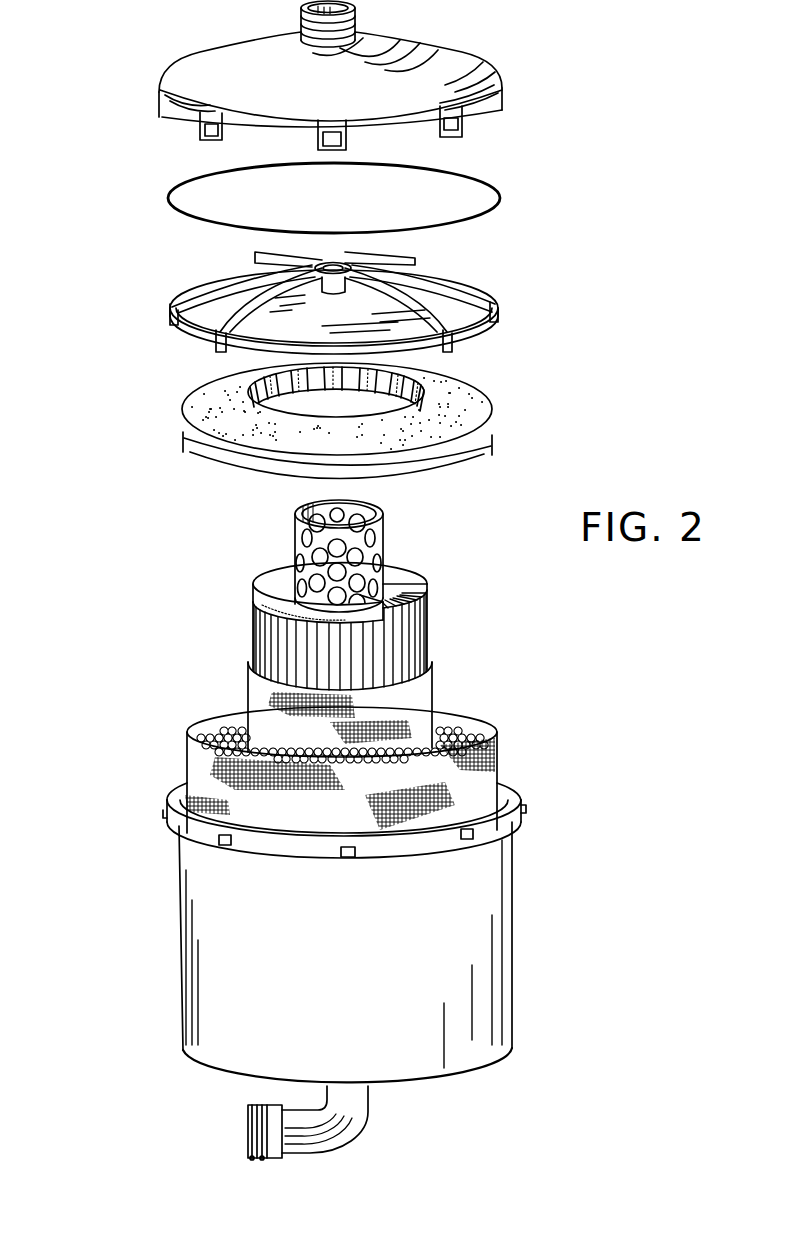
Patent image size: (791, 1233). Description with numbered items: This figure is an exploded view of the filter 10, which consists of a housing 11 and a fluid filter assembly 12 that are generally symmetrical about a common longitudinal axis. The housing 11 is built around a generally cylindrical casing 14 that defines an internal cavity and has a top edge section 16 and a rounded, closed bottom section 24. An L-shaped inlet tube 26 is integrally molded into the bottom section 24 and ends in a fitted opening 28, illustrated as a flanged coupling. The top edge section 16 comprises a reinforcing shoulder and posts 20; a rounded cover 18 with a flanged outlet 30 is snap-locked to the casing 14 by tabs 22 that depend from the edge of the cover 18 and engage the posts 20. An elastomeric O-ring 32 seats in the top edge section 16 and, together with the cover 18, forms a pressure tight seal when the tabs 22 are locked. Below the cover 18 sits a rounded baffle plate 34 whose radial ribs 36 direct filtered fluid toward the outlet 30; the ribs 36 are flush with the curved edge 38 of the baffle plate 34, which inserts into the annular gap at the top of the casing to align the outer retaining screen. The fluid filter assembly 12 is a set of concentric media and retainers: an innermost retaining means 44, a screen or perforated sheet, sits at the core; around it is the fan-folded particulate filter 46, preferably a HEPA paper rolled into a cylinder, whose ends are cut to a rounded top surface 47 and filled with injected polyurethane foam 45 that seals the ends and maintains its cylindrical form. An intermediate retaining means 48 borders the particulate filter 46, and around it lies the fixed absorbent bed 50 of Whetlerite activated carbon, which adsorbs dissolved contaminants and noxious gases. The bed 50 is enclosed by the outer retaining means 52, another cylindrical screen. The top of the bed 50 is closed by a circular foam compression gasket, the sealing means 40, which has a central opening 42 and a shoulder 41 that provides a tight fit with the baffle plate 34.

The filter 10 is at (156, 904).
The housing 11 is at (245, 961).
The fluid filter assembly 12 is at (148, 603).
The casing 14 is at (355, 969).
The top edge section 16 is at (349, 830).
The cover 18 is at (300, 79).
The posts 20 is at (470, 836).
The tabs 22 is at (208, 138).
The bottom section 24 is at (403, 1088).
The inlet tube 26 is at (350, 1113).
The fitted opening 28 is at (250, 1095).
The outlet 30 is at (356, 4).
The O-ring 32 is at (478, 178).
The baffle plate 34 is at (416, 270).
The ribs 36 is at (474, 284).
The edge 38 is at (427, 350).
The sealing means 40 is at (297, 427).
The shoulder 41 is at (362, 382).
The central opening 42 is at (307, 410).
The innermost retaining means 44 is at (302, 540).
The polyurethane foam 45 is at (270, 578).
The particulate filter 46 is at (380, 623).
The rounded top surface 47 is at (417, 578).
The intermediate retaining means 48 is at (245, 690).
The fixed absorbent bed 50 is at (464, 737).
The outer retaining means 52 is at (183, 770).